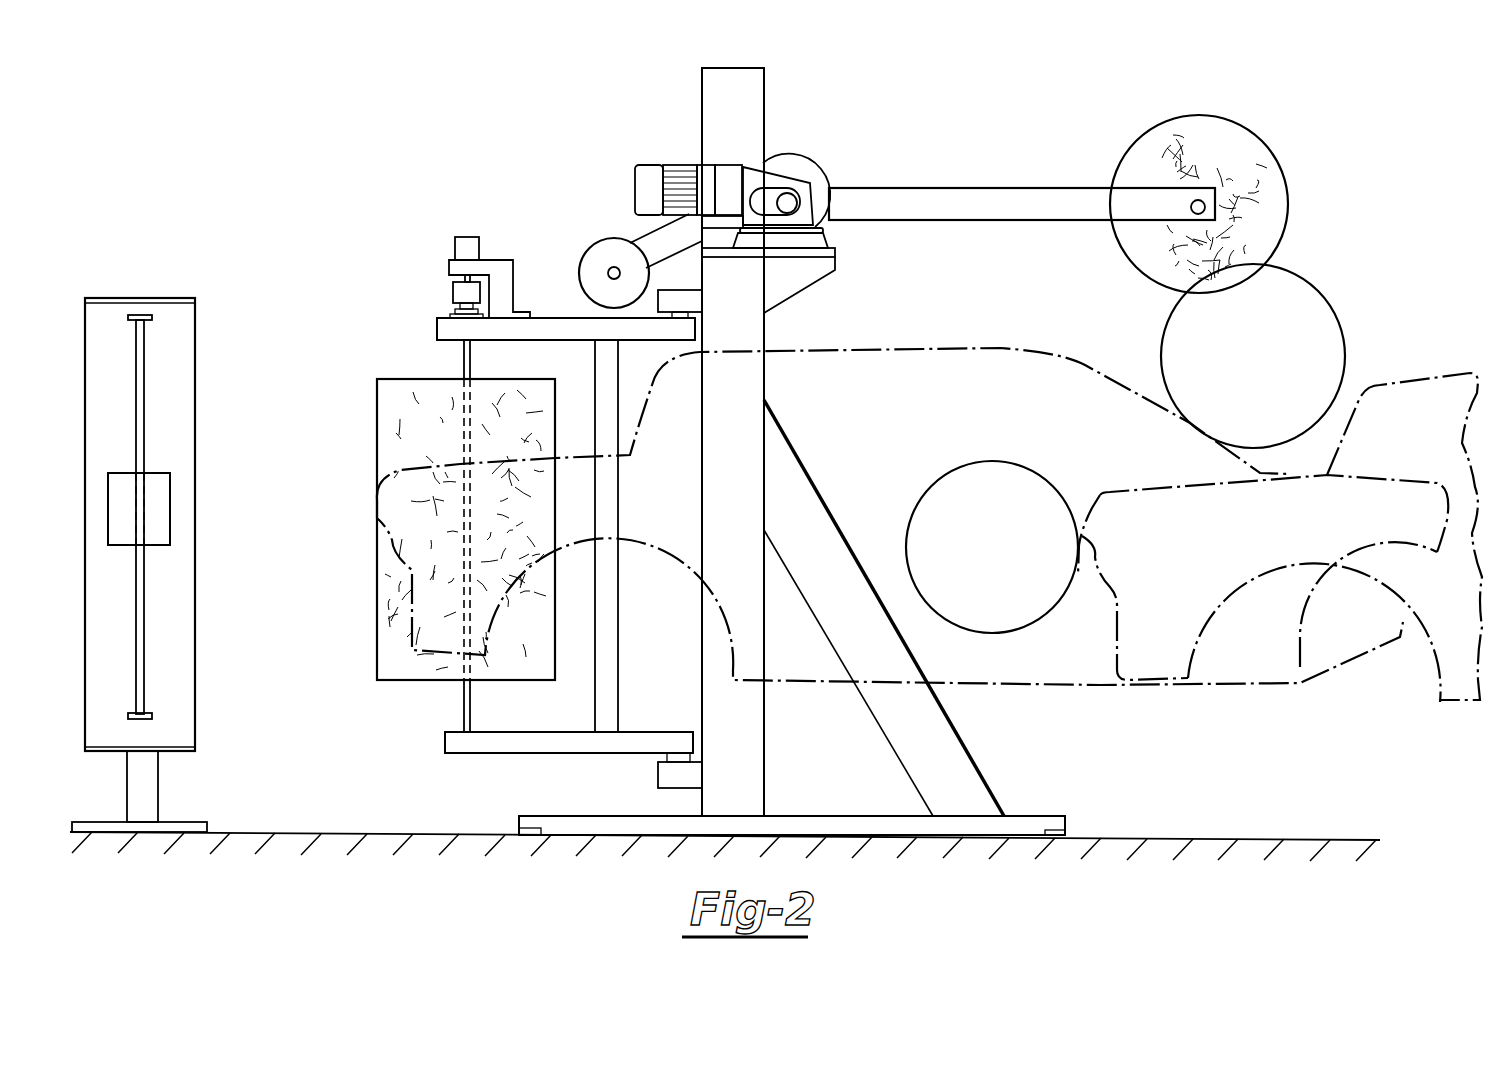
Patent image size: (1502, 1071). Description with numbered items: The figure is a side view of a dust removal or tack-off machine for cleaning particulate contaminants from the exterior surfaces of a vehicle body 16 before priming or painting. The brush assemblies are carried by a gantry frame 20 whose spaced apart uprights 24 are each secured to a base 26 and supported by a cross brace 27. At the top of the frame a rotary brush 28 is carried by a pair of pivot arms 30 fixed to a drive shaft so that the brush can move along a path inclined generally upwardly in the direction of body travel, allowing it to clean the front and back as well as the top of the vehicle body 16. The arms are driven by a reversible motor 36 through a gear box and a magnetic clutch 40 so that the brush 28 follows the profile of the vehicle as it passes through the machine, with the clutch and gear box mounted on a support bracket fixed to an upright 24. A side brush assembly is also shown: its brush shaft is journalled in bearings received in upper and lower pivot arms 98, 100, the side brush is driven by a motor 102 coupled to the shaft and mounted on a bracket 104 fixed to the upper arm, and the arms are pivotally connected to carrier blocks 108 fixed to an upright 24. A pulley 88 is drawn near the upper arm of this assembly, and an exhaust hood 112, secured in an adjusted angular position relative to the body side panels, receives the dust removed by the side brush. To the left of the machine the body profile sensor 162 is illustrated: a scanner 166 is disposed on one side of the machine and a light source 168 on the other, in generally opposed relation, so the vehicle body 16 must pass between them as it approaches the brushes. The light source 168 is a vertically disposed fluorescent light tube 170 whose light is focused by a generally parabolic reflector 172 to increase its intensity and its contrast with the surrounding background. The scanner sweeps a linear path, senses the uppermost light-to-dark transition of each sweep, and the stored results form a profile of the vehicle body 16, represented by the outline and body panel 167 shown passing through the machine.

The vehicle body 16 is at (945, 343).
The body panel 167 is at (1391, 536).
The gantry frame 20 is at (620, 830).
The upright 24 is at (752, 88).
The base 26 is at (837, 830).
The cross brace 27 is at (958, 779).
The rotary brush 28 is at (1266, 145).
The pivot arm 30 is at (980, 188).
The reversible motor 36 is at (657, 165).
The magnetic clutch 40 is at (783, 160).
The pulley 88 is at (611, 212).
The upper pivot arm 98 is at (541, 323).
The lower pivot arm 100 is at (637, 732).
The motor 102 is at (469, 237).
The bracket 104 is at (498, 258).
The carrier block 108 is at (680, 299).
The exhaust hood 112 is at (378, 472).
The body profile sensor 162 is at (208, 690).
The scanner 166 is at (172, 511).
The light source 168 is at (196, 402).
The florescent light tube 170 is at (146, 352).
The parabolic reflector 172 is at (142, 446).